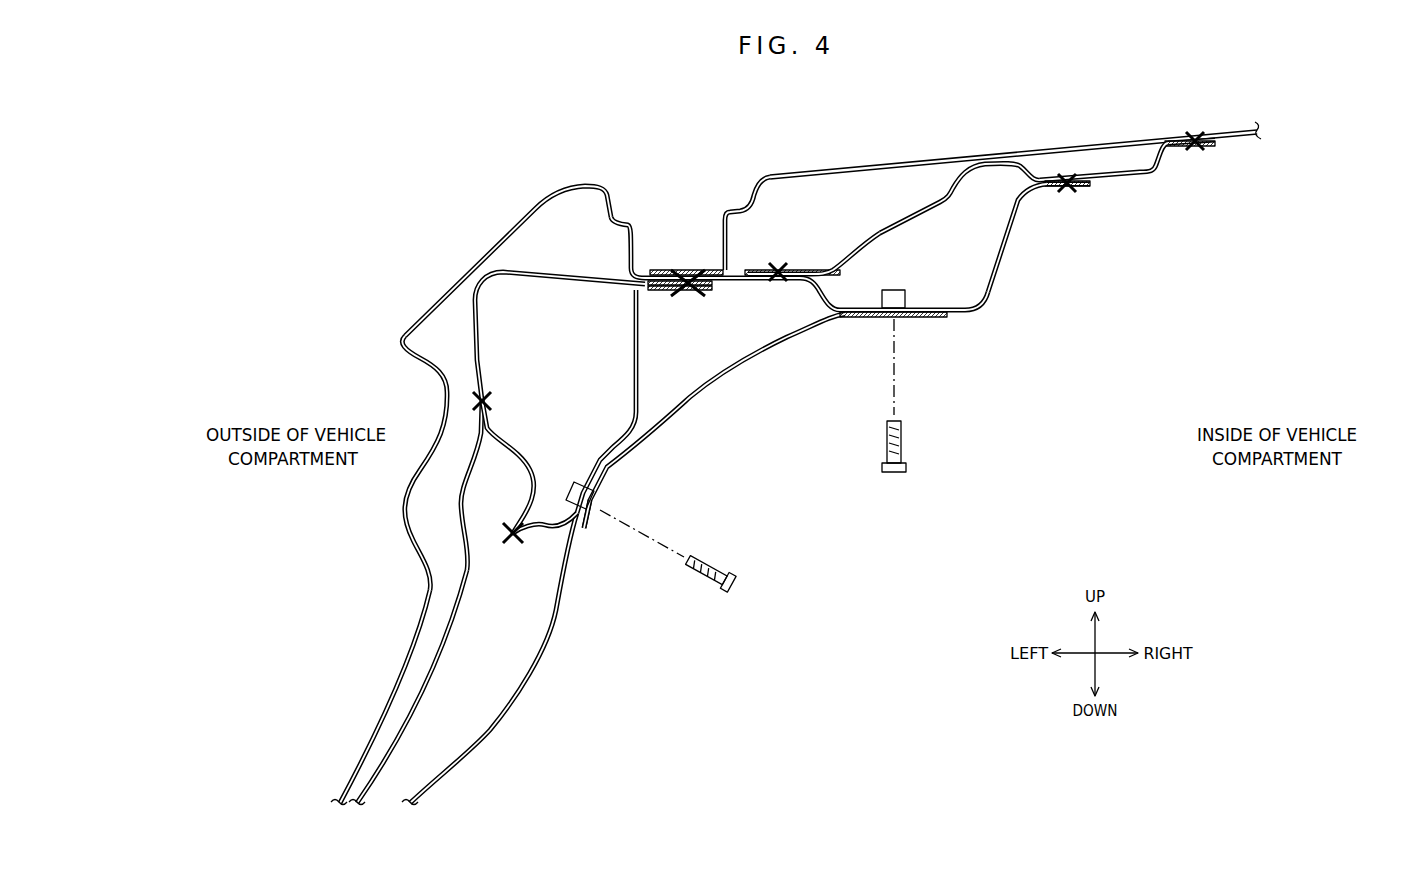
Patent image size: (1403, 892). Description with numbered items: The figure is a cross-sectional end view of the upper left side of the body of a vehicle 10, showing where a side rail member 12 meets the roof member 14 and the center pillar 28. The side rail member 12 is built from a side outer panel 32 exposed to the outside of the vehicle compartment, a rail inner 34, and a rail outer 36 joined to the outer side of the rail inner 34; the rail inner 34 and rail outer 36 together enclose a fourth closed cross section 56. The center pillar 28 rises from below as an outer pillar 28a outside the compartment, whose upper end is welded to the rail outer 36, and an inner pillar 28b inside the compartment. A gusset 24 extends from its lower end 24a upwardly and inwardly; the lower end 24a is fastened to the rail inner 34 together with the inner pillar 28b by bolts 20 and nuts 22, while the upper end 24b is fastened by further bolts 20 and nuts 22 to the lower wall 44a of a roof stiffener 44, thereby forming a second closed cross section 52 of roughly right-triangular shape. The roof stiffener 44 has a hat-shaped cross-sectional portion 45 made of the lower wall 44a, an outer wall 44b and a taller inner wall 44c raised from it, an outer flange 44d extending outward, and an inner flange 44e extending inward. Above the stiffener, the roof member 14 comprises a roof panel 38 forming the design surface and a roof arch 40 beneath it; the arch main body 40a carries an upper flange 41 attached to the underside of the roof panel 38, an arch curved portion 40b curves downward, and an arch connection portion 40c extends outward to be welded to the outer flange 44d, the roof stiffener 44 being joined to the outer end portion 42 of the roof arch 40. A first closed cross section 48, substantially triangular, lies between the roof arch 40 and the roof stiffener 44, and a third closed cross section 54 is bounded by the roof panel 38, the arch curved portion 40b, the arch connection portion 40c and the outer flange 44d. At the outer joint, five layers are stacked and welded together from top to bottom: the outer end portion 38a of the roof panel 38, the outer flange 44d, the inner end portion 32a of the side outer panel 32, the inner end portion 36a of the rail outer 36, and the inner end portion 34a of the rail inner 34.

The vehicle 10 is at (455, 170).
The side rail member 12 is at (421, 311).
The roof member 14 is at (858, 167).
The bolt 20 is at (893, 475).
The nut 22 is at (884, 300).
The gusset 24 is at (637, 462).
The lower end of gusset 24a is at (588, 527).
The upper end of gusset 24b is at (910, 319).
The center pillar 28 is at (456, 659).
The outer pillar 28a is at (418, 688).
The inner pillar 28b is at (529, 665).
The side outer panel 32 is at (488, 243).
The inner end portion of side outer panel 32a is at (720, 281).
The rail inner 34 is at (637, 403).
The inner end portion of rail inner 34a is at (707, 292).
The rail outer 36 is at (473, 332).
The inner end portion of rail outer 36a is at (713, 286).
The roof panel 38 is at (783, 177).
The outer end portion of roof panel 38a is at (654, 266).
The roof arch 40 is at (1015, 258).
The arch main body 40a is at (1145, 173).
The arch curved portion 40b is at (926, 203).
The arch connection portion 40c is at (763, 272).
The upper flange 41 is at (1218, 142).
The outer end portion of roof arch 42 is at (738, 268).
The roof stiffener 44 is at (935, 281).
The lower wall 44a is at (962, 318).
The outer wall 44b is at (820, 300).
The inner wall 44c is at (1000, 263).
The outer flange 44d is at (625, 278).
The inner flange 44e is at (1080, 187).
The hat-shaped cross-sectional portion 45 is at (1012, 236).
The first closed cross section 48 is at (918, 251).
The second closed cross section 52 is at (671, 341).
The third closed cross section 54 is at (796, 216).
The fourth closed cross section 56 is at (541, 356).